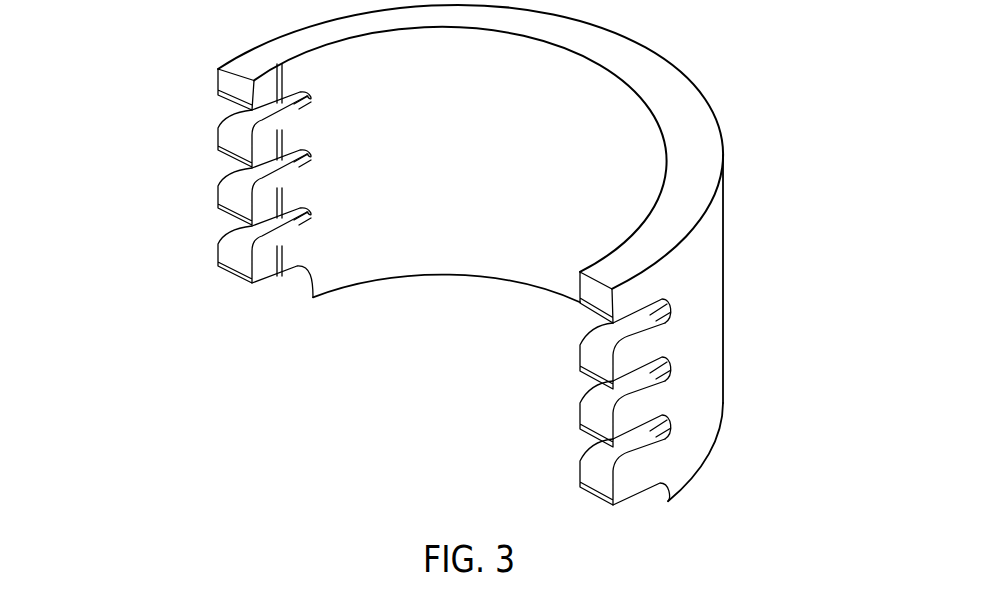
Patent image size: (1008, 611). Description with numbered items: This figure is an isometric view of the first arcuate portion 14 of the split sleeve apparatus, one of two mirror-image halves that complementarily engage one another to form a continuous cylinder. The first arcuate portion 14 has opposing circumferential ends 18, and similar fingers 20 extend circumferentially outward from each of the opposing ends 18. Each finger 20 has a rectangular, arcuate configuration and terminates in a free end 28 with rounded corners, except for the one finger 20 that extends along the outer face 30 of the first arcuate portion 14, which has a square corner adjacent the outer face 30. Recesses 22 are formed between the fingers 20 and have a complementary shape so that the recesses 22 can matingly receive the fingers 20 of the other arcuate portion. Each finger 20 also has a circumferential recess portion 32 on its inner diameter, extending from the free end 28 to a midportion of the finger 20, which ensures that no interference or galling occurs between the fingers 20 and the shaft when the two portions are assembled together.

The first arcuate portion 14 is at (697, 92).
The outer face 30 is at (692, 172).
The opposing circumferential ends 18 is at (460, 284).
The fingers 20 is at (221, 268).
The recesses 22 is at (654, 430).
The free end 28 is at (221, 209).
The circumferential recess portion 32 is at (262, 282).